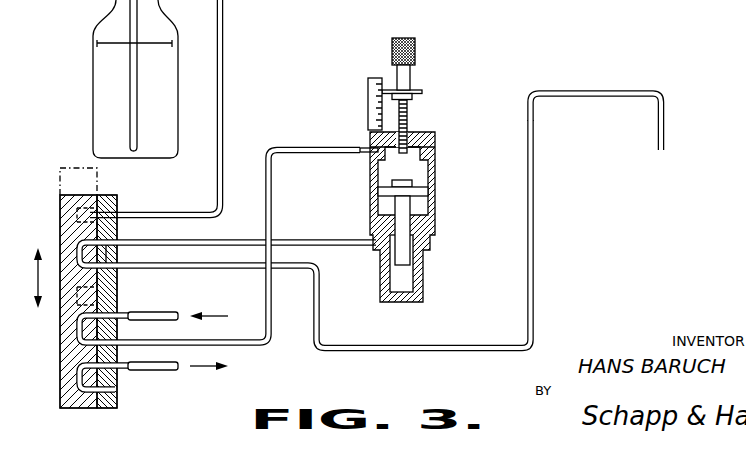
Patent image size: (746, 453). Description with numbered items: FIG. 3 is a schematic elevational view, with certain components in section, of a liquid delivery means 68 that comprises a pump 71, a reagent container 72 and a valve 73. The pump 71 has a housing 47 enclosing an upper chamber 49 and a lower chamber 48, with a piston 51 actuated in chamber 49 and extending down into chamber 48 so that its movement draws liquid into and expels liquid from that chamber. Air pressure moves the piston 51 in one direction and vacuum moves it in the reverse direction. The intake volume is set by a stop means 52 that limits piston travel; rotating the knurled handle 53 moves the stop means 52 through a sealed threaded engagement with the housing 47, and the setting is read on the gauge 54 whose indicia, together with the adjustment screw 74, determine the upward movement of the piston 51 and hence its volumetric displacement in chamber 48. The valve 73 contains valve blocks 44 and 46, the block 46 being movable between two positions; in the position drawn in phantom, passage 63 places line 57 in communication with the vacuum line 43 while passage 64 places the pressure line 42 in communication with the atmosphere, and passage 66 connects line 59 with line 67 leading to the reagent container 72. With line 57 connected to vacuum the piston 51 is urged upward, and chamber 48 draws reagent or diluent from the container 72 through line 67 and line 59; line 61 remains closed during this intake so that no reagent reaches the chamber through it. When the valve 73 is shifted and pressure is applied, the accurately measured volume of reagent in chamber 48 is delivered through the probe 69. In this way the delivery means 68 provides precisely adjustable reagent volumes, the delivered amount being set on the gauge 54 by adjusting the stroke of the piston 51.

The pressure line 42 is at (162, 314).
The vacuum line 43 is at (158, 370).
The valve block 44 is at (107, 409).
The valve block 46 is at (56, 384).
The housing 47 is at (437, 170).
The chamber 48 is at (408, 288).
The chamber 49 is at (383, 167).
The piston 51 is at (403, 220).
The stop means 52 is at (407, 120).
The knurled handle 53 is at (416, 55).
The gauge 54 is at (373, 78).
The line 57 is at (320, 146).
The line 59 is at (302, 241).
The line 61 is at (321, 311).
The passage 63 is at (63, 405).
The passage 64 is at (77, 330).
The passage 66 is at (77, 250).
The line 67 is at (223, 70).
The liquid delivery means 68 is at (306, 48).
The probe 69 is at (662, 125).
The pump 71 is at (459, 104).
The reagent container 72 is at (91, 88).
The valve 73 is at (53, 186).
The adjustment screw 74 is at (436, 137).